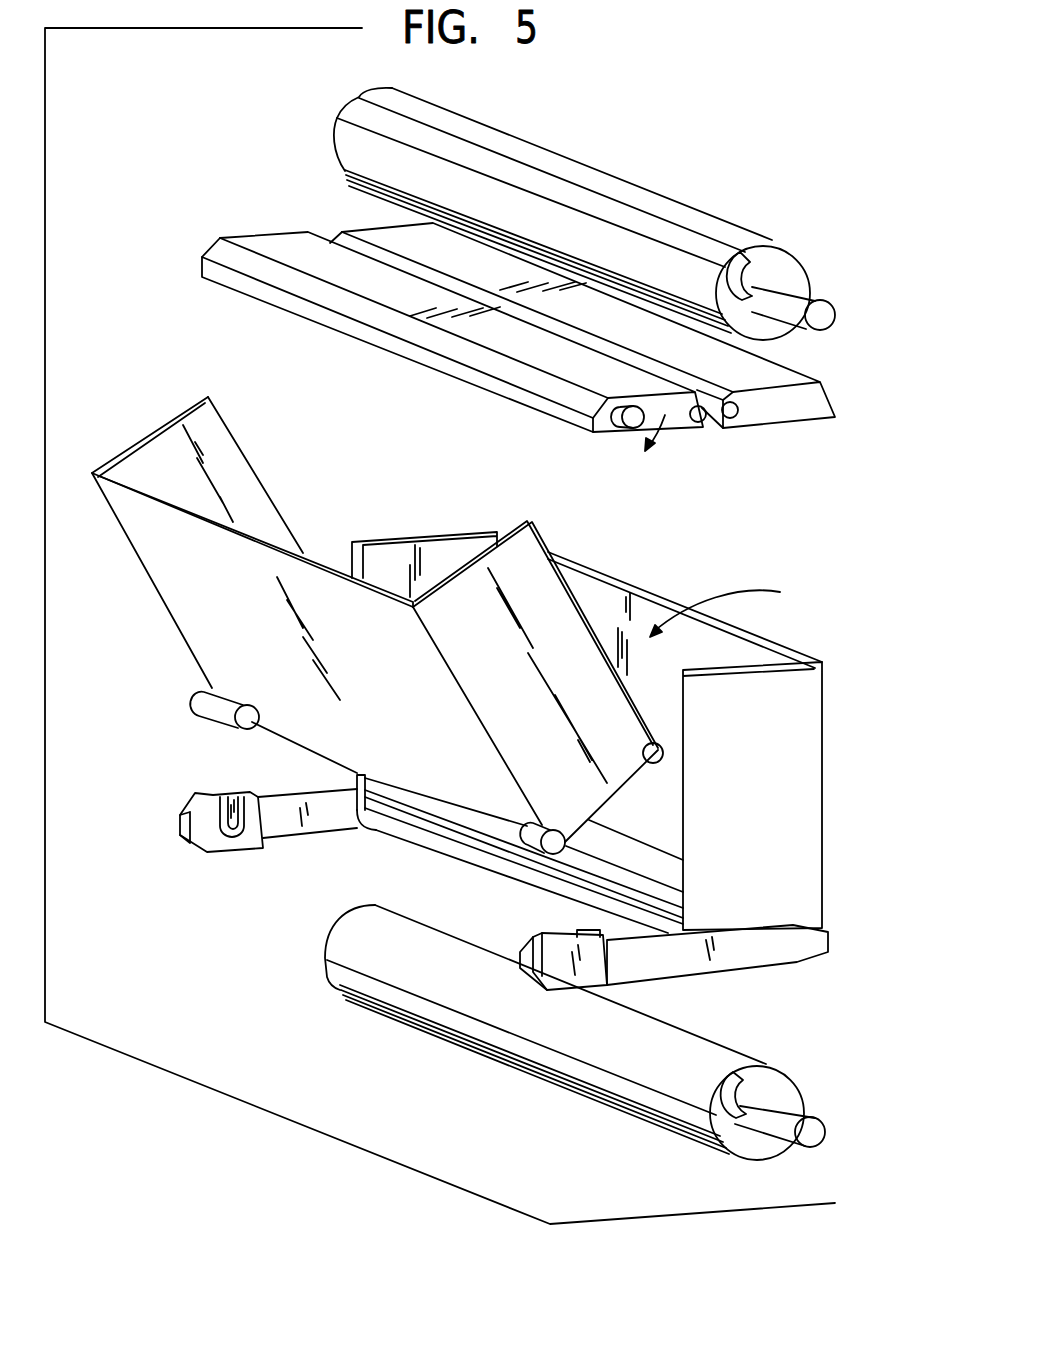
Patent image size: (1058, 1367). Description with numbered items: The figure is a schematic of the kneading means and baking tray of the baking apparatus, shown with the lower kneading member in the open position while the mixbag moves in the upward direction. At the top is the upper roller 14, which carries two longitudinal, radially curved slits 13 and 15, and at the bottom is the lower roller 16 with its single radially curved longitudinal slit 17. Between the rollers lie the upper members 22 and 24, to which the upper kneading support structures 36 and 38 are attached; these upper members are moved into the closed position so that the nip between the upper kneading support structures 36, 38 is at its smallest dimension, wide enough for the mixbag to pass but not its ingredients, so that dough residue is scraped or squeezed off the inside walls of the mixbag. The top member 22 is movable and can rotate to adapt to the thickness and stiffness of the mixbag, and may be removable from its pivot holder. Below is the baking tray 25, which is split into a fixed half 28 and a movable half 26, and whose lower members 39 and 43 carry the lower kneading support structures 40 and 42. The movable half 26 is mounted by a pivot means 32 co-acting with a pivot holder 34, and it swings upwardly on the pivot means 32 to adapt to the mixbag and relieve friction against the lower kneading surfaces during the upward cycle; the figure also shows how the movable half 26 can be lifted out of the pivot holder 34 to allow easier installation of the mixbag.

The longitudinal radially curved slit 13 is at (725, 290).
The upper roller 14 is at (540, 152).
The longitudinal radially curved slit 15 is at (767, 247).
The lower roller 16 is at (522, 1052).
The longitudinal slit 17 is at (722, 1088).
The upper member 22 is at (430, 348).
The upper member 24 is at (793, 380).
The baking tray 25 is at (587, 681).
The movable baking tray portion 26 is at (190, 566).
The fixed baking tray portion 28 is at (807, 745).
The pivot means 32 is at (213, 712).
The pivot holder 34 is at (180, 822).
The upper kneading support structure 36 is at (736, 413).
The upper kneading support structure 38 is at (698, 422).
The lower member 39 is at (769, 927).
The lower kneading support structure 40 is at (387, 830).
The lower kneading support structure 42 is at (660, 752).
The lower member 43 is at (640, 790).